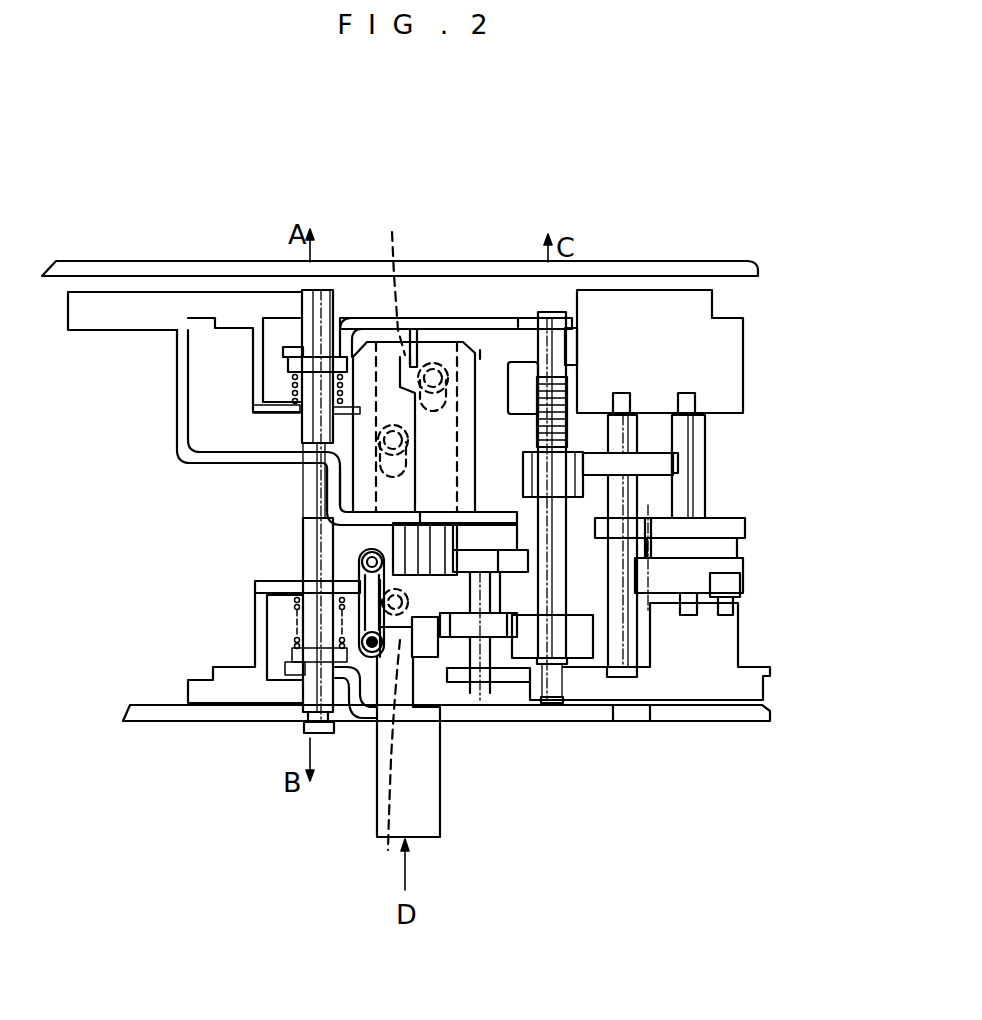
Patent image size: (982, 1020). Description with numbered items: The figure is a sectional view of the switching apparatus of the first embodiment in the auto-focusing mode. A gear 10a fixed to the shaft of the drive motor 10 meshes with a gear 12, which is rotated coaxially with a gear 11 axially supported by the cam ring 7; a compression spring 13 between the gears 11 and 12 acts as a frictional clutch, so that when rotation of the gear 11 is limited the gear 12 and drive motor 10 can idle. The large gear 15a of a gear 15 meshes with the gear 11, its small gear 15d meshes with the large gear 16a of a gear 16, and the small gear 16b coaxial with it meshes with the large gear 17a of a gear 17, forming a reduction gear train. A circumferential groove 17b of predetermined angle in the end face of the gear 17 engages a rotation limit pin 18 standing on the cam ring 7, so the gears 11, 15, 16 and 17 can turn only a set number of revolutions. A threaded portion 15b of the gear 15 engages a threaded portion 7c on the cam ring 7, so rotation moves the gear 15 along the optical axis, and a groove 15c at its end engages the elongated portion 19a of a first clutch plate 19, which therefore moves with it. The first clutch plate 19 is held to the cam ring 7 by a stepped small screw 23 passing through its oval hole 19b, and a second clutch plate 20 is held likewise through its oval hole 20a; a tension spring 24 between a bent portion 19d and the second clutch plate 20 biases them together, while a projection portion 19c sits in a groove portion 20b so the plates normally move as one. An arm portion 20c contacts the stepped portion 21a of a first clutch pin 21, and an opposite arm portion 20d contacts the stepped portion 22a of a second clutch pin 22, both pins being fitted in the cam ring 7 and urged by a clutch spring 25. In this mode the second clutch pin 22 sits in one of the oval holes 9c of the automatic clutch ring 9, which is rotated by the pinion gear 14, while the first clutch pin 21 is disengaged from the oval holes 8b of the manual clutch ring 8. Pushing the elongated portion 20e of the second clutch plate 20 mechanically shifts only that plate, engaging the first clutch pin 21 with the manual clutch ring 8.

The cam ring 7 is at (103, 303).
The threaded portion 7c is at (576, 352).
The manual clutch ring 8 is at (671, 273).
The oval holes 8b is at (630, 265).
The automatic clutch ring 9 is at (738, 722).
The oval holes 9c is at (635, 717).
The drive motor 10 is at (490, 314).
The gear 10a is at (393, 540).
The gear 11 is at (505, 677).
The gear 12 is at (524, 560).
The compression spring 13 is at (470, 667).
The pinion gear 14 is at (493, 513).
The gear 15 is at (555, 660).
The large gear 15a is at (593, 663).
The threaded portion 15b is at (577, 415).
The groove 15c is at (573, 313).
The small gear 15d is at (581, 450).
The gear 16 is at (640, 468).
The large gear 16a is at (700, 453).
The small gear 16b is at (650, 530).
The gear 17 is at (690, 530).
The large gear 17a is at (747, 530).
The circumferential groove 17b is at (743, 567).
The rotation limit pin 18 is at (743, 597).
The first clutch plate 19 is at (455, 350).
The elongated portion 19a is at (518, 318).
The oval hole 19b is at (480, 350).
The projection portion 19c is at (410, 355).
The bent portion 19d is at (386, 842).
The second clutch plate 20 is at (377, 340).
The oval hole 20a is at (322, 493).
The groove portion 20b is at (406, 279).
The arm portion 20c is at (350, 335).
The arm portion 20d is at (356, 669).
The elongated portion 20e is at (417, 827).
The first clutch pin 21 is at (300, 290).
The stepped portion 21a is at (290, 363).
The second clutch pin 22 is at (298, 733).
The stepped portion 22a is at (293, 657).
The stepped small screw 23 is at (433, 360).
The tension spring 24 is at (298, 613).
The clutch spring 25 is at (293, 392).